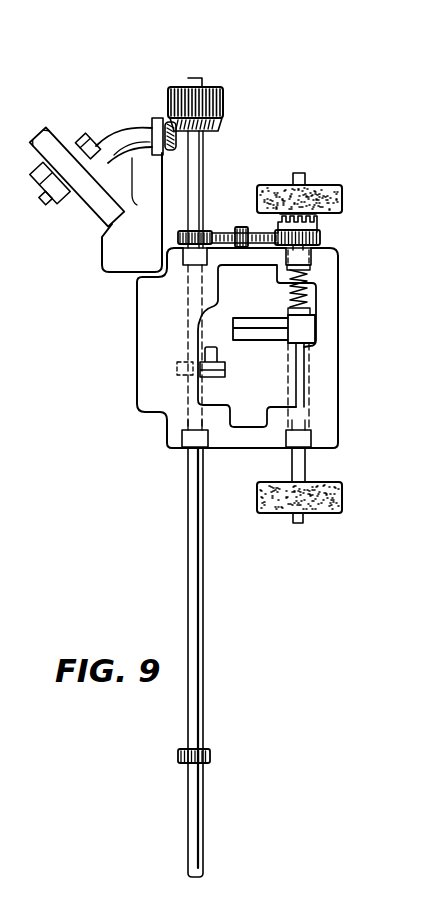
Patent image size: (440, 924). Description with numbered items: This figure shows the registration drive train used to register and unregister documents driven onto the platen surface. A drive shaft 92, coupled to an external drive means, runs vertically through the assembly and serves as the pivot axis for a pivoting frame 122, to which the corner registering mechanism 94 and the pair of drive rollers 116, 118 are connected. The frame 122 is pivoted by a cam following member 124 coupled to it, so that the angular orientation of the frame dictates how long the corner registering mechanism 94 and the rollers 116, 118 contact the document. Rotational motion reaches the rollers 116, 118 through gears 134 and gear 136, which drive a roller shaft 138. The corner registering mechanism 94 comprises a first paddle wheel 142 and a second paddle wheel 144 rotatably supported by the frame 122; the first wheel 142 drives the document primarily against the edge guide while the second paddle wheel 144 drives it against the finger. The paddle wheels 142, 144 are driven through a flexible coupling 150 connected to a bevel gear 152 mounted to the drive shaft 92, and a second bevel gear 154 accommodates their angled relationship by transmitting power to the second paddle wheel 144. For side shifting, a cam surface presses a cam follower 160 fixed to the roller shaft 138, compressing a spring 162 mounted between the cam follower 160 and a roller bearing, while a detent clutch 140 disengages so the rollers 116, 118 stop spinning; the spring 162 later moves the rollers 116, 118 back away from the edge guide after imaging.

The corner registering mechanism 94 is at (73, 88).
The drive shaft 92 is at (185, 521).
The drive roller 116 is at (317, 185).
The drive roller 118 is at (320, 513).
The pivoting frame 122 is at (135, 330).
The cam following member 124 is at (223, 377).
The gears 134 is at (222, 231).
The gear 136 is at (322, 238).
The roller shaft 138 is at (295, 370).
The detent clutch 140 is at (320, 219).
The first paddle wheel 142 is at (88, 141).
The second paddle wheel 144 is at (41, 185).
The flexible coupling 150 is at (132, 130).
The bevel gear 152 is at (222, 123).
The second bevel gear 154 is at (71, 138).
The cam follower 160 is at (265, 330).
The spring 162 is at (289, 303).